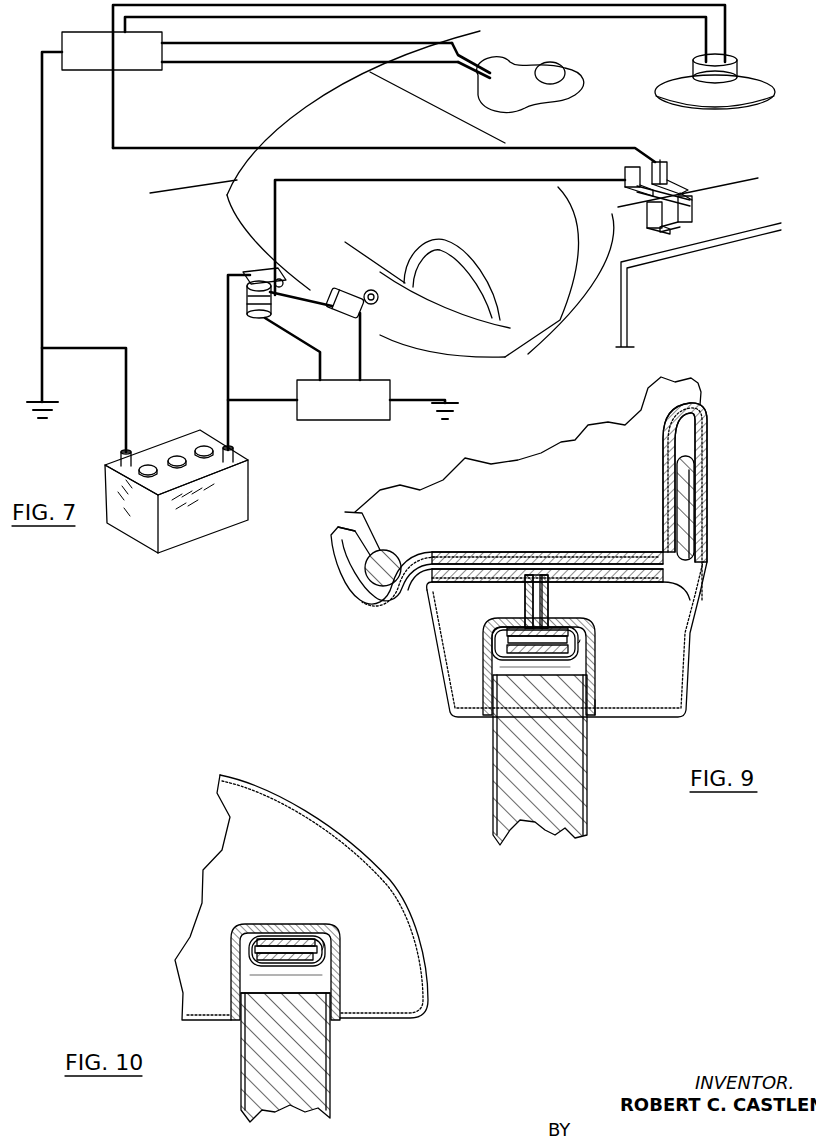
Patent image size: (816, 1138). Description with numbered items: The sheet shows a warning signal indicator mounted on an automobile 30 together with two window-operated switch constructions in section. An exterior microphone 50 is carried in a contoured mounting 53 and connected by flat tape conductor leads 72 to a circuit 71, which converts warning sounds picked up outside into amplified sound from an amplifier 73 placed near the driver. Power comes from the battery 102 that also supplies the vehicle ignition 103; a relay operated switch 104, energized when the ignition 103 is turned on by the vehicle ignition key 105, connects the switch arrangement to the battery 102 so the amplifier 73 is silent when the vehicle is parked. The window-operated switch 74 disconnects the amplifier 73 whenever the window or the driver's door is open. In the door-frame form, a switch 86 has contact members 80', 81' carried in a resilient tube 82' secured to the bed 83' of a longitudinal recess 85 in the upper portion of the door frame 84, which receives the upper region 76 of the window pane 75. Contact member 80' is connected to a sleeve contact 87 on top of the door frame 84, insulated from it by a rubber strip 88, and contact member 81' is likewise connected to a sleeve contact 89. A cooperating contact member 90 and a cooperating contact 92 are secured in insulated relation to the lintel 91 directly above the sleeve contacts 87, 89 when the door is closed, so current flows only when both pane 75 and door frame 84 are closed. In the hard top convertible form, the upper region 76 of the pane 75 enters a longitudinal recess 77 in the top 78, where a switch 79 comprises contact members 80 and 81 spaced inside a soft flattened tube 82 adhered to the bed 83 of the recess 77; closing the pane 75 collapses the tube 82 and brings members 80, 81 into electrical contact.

In FIG. 7, the circuit 71 is at (93, 35).
In FIG. 7, the automobile 30 is at (292, 118).
In FIG. 7, the microphone 50 is at (560, 72).
In FIG. 7, the flat tape conductor leads 72 is at (481, 77).
In FIG. 7, the mounting 53 is at (508, 100).
In FIG. 7, the amplifier 73 is at (736, 88).
In FIG. 7, the window-operated switch 74 is at (643, 144).
In FIG. 9, the window-operated switch 74 is at (507, 640).
In FIG. 10, the window-operated switch 74 is at (250, 949).
In FIG. 7, the cooperating contact 92 is at (668, 176).
In FIG. 7, the switch 86 is at (700, 178).
In FIG. 9, the switch 86 is at (583, 636).
In FIG. 7, the sleeve contact 89 is at (710, 187).
In FIG. 7, the cooperating contact member 90 is at (627, 192).
In FIG. 9, the cooperating contact member 90 is at (503, 568).
In FIG. 7, the sleeve contact 87 is at (637, 204).
In FIG. 9, the sleeve contact 87 is at (590, 566).
In FIG. 7, the contact member 80' is at (653, 243).
In FIG. 9, the contact member 80' is at (568, 618).
In FIG. 7, the contact member 81' is at (691, 235).
In FIG. 9, the contact member 81' is at (569, 655).
In FIG. 7, the window pane 75 is at (686, 291).
In FIG. 9, the window pane 75 is at (583, 790).
In FIG. 10, the window pane 75 is at (310, 1065).
In FIG. 7, the relay operated switch 104 is at (257, 273).
In FIG. 7, the vehicle ignition key 105 is at (353, 317).
In FIG. 7, the vehicle ignition 103 is at (322, 412).
In FIG. 7, the battery 102 is at (170, 538).
In FIG. 9, the lintel 91 is at (560, 487).
In FIG. 9, the rubber strip 88 is at (651, 582).
In FIG. 9, the bed 83' is at (524, 626).
In FIG. 9, the resilient tube 82' is at (567, 671).
In FIG. 9, the door frame 84 is at (432, 665).
In FIG. 9, the upper region 76 is at (528, 683).
In FIG. 10, the upper region 76 is at (280, 1005).
In FIG. 9, the longitudinal recess 85 is at (597, 680).
In FIG. 10, the bed 83 is at (281, 932).
In FIG. 10, the contact member 80 is at (291, 917).
In FIG. 10, the switch 79 is at (326, 941).
In FIG. 10, the top 78 is at (418, 912).
In FIG. 10, the contact member 81 is at (319, 965).
In FIG. 10, the flattened tube 82 is at (260, 980).
In FIG. 10, the longitudinal recess 77 is at (310, 983).